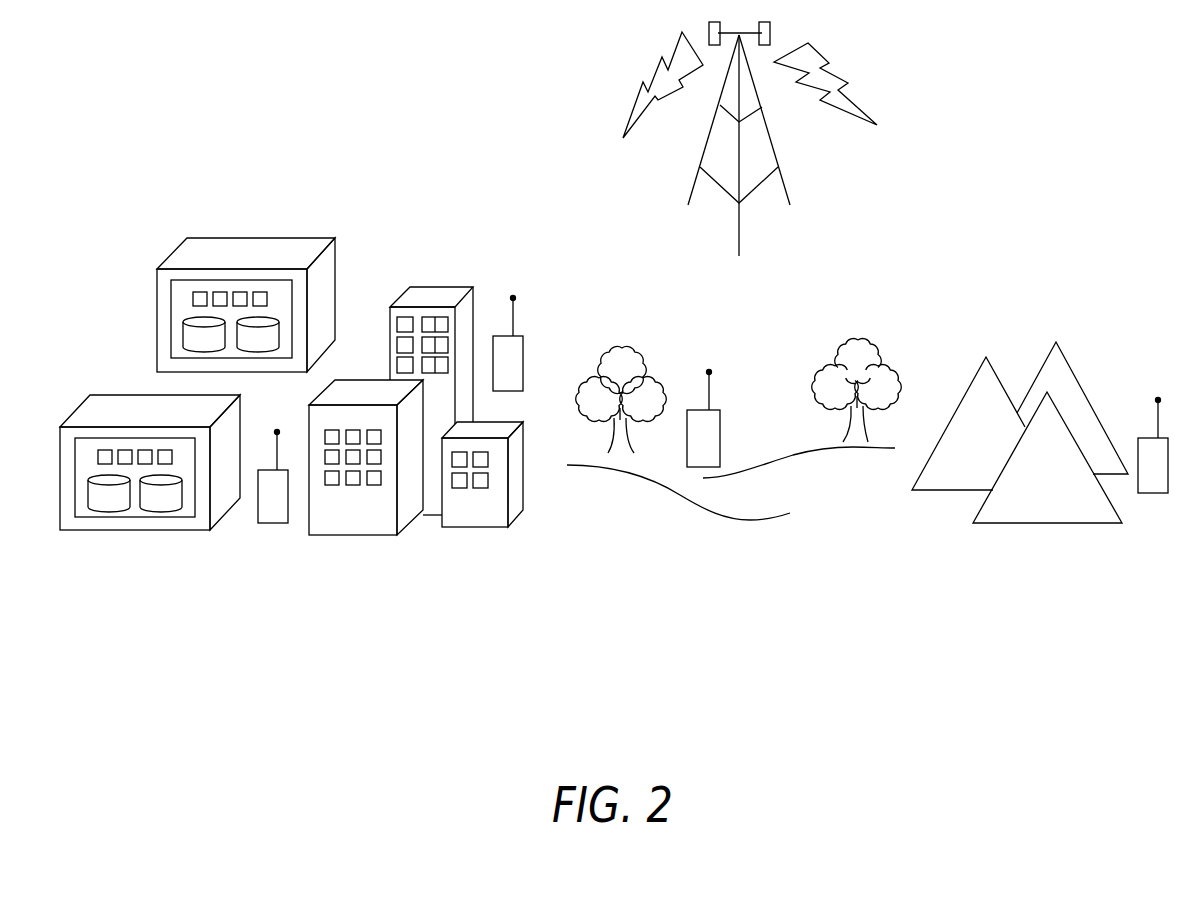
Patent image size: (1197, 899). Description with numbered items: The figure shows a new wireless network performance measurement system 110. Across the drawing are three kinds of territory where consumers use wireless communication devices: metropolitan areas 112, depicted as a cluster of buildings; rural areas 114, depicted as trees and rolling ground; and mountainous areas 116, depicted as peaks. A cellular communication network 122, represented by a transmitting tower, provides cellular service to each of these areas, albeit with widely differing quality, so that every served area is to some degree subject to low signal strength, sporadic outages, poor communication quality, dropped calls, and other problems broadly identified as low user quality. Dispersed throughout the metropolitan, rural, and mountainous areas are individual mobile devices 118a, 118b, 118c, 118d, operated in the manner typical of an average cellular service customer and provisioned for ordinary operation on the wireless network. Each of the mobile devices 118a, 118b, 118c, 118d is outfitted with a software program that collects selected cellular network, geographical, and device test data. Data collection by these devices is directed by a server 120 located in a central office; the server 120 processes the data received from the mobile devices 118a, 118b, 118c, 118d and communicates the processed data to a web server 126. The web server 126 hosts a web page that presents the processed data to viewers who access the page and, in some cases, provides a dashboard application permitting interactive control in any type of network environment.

The wireless network performance measurement system 110 is at (963, 681).
The metropolitan areas 112 is at (399, 586).
The rural areas 114 is at (741, 573).
The mountainous areas 116 is at (1060, 563).
The mobile device 118a is at (275, 525).
The mobile device 118b is at (523, 363).
The mobile device 118c is at (720, 437).
The mobile device 118d is at (1150, 495).
The server 120 is at (137, 508).
The cellular communication network 122 is at (758, 188).
The web server 126 is at (182, 310).